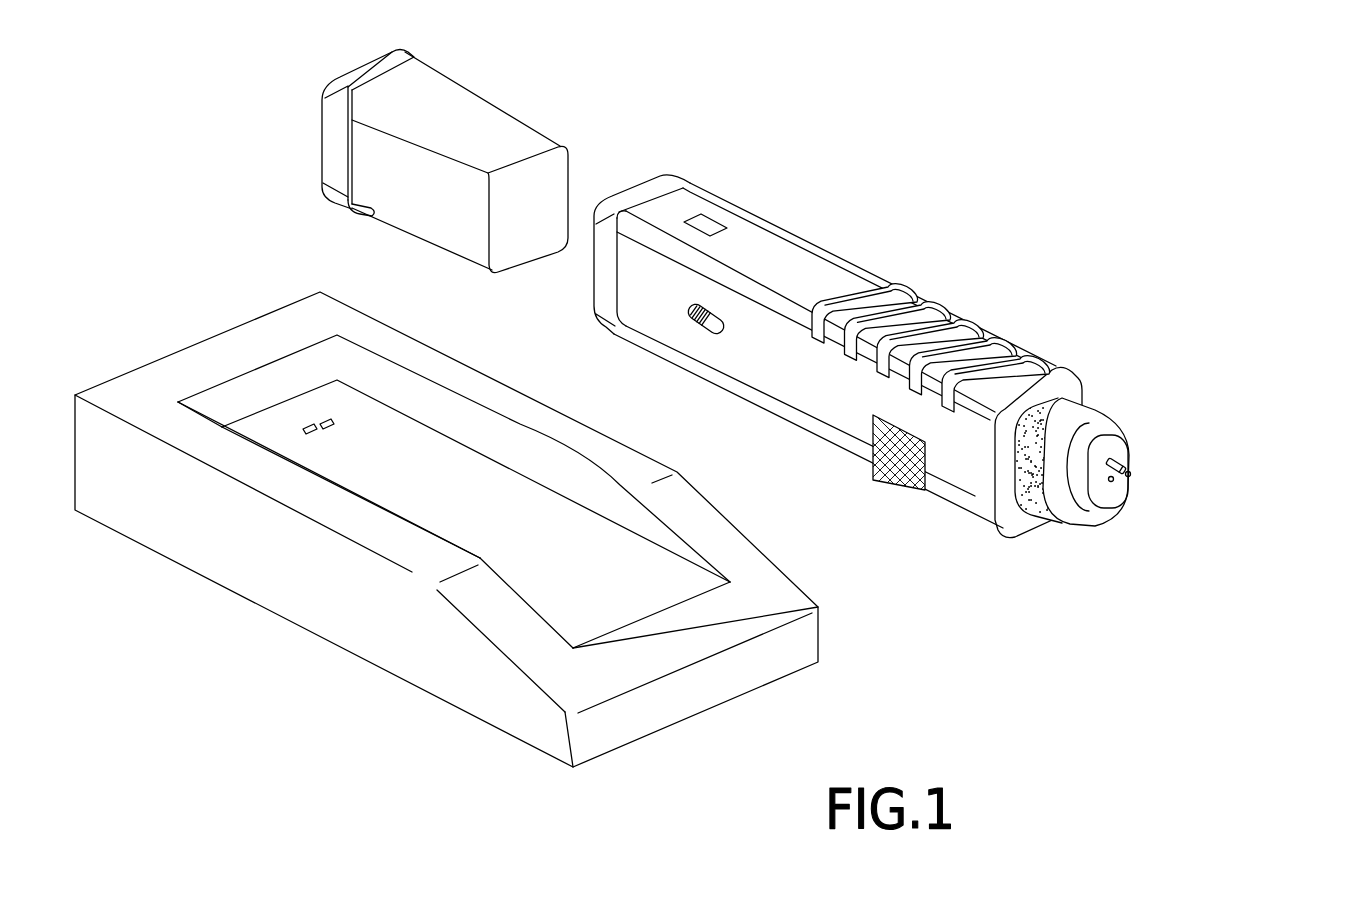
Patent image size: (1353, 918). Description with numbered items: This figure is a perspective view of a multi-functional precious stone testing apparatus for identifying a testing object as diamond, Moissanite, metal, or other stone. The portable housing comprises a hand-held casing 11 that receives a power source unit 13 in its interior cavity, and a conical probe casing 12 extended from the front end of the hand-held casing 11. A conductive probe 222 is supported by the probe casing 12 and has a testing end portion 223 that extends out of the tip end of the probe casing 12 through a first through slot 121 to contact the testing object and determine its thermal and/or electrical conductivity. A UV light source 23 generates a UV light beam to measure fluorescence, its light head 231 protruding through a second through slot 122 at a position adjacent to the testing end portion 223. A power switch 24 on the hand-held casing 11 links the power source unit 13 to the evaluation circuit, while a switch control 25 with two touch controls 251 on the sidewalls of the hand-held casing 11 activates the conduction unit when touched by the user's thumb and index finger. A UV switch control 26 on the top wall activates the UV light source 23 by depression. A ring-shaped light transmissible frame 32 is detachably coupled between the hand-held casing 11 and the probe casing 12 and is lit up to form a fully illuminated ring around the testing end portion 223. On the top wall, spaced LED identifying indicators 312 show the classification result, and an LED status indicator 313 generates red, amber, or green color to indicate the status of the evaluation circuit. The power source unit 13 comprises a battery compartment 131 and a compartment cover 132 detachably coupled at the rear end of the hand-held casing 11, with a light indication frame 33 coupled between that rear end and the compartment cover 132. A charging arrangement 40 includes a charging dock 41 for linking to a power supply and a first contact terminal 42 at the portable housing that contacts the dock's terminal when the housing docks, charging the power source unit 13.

The hand-held casing 11 is at (969, 400).
The probe casing 12 is at (1193, 507).
The first through slot 121 is at (1120, 448).
The second through slot 122 is at (1105, 490).
The power source unit 13 is at (465, 168).
The battery compartment 131 is at (566, 288).
The compartment cover 132 is at (398, 62).
The conductive probe 222 is at (1234, 446).
The testing end portion 223 is at (1130, 475).
The UV light source 23 is at (1169, 584).
The light head 231 is at (1113, 483).
The power switch 24 is at (700, 330).
The switch control 25 is at (964, 536).
The touch controls 251 is at (890, 470).
The UV switch control 26 is at (705, 222).
The LED identifying indicators 312 is at (983, 337).
The LED status indicator 313 is at (998, 357).
The light transmissible frame 32 is at (1050, 405).
The light indication frame 33 is at (642, 192).
The charging arrangement 40 is at (318, 683).
The charging dock 41 is at (735, 668).
The first contact terminal 42 is at (330, 418).